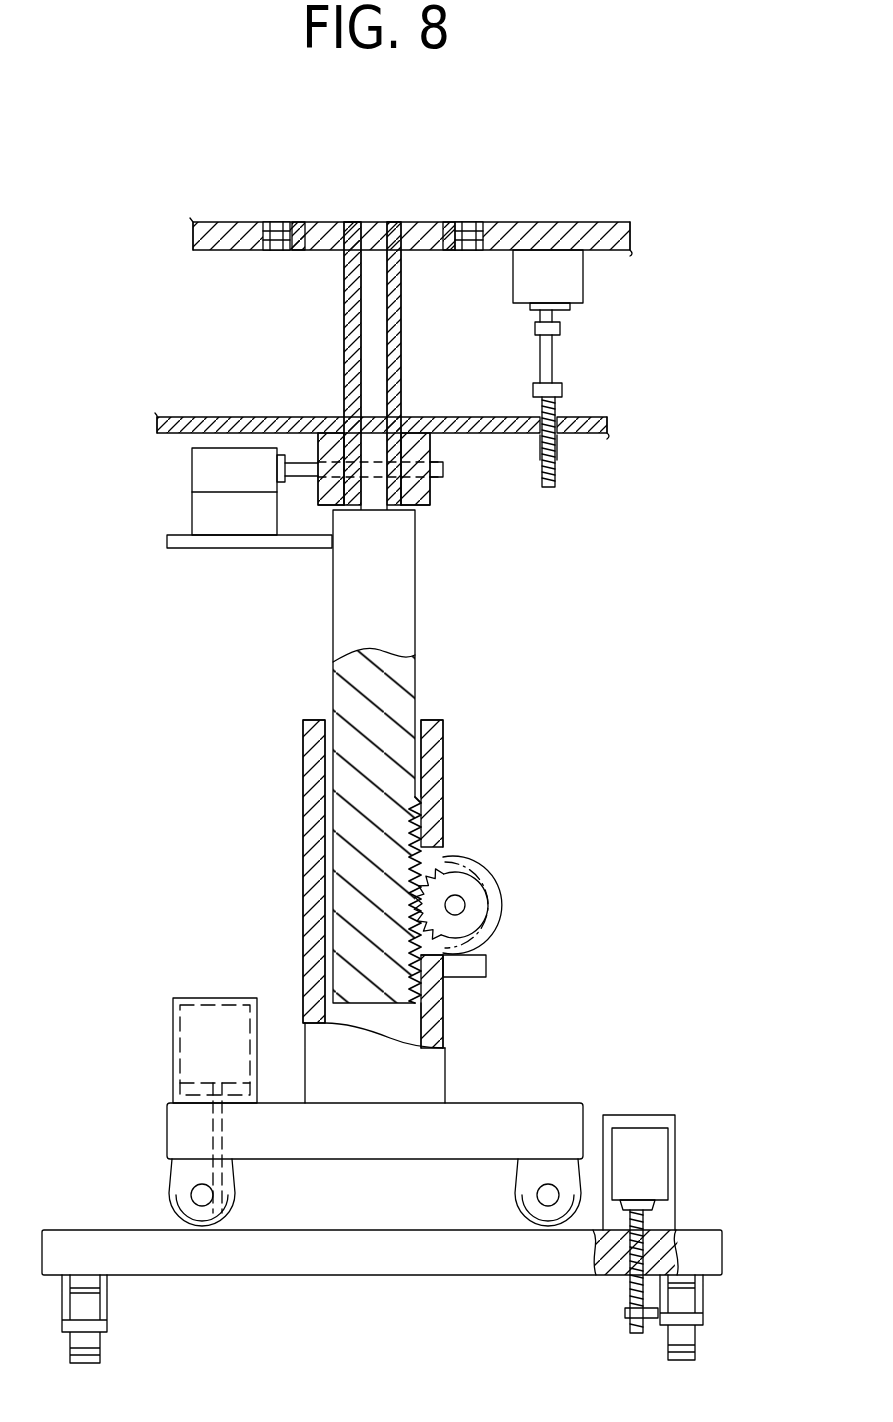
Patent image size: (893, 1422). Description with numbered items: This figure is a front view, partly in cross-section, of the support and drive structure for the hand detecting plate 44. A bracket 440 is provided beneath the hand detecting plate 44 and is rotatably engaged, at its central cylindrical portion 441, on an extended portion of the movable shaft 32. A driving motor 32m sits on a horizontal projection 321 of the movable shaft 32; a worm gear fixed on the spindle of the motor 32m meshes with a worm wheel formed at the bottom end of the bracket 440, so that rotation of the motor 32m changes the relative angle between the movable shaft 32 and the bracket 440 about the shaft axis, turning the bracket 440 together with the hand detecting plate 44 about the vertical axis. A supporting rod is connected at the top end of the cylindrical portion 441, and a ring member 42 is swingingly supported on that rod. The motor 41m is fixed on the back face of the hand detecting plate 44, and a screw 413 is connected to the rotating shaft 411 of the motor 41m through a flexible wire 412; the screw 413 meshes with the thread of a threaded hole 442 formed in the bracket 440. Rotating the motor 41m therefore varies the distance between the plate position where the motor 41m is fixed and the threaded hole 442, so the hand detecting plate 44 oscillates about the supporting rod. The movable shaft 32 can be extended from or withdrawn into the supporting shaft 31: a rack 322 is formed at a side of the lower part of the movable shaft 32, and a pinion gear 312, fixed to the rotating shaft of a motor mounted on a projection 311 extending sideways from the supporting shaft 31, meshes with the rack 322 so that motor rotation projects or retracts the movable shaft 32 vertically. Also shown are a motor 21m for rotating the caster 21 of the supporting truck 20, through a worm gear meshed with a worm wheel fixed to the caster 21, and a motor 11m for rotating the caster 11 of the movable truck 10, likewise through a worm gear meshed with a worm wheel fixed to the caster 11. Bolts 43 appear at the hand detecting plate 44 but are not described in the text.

The movable truck 10 is at (436, 1272).
The caster 11 is at (102, 1332).
The motor 11m is at (660, 1155).
The supporting truck 20 is at (553, 1112).
The caster 21 is at (167, 1200).
The motor 21m is at (220, 1020).
The supporting shaft 31 is at (303, 848).
The projection 311 is at (466, 980).
The pinion gear 312 is at (503, 903).
The movable shaft 32 is at (340, 690).
The horizontal projection 321 is at (217, 548).
The rack 322 is at (428, 835).
The driving motor 32m is at (192, 486).
The rotating shaft 411 is at (562, 316).
The flexible wire 412 is at (565, 364).
The screw 413 is at (560, 466).
The motor 41m is at (570, 272).
The ring member 42 is at (300, 232).
The bolt 43 is at (275, 230).
The hand detecting plate 44 is at (585, 236).
The bracket 440 is at (300, 430).
The central cylindrical portion 441 is at (398, 352).
The threaded hole 442 is at (540, 450).